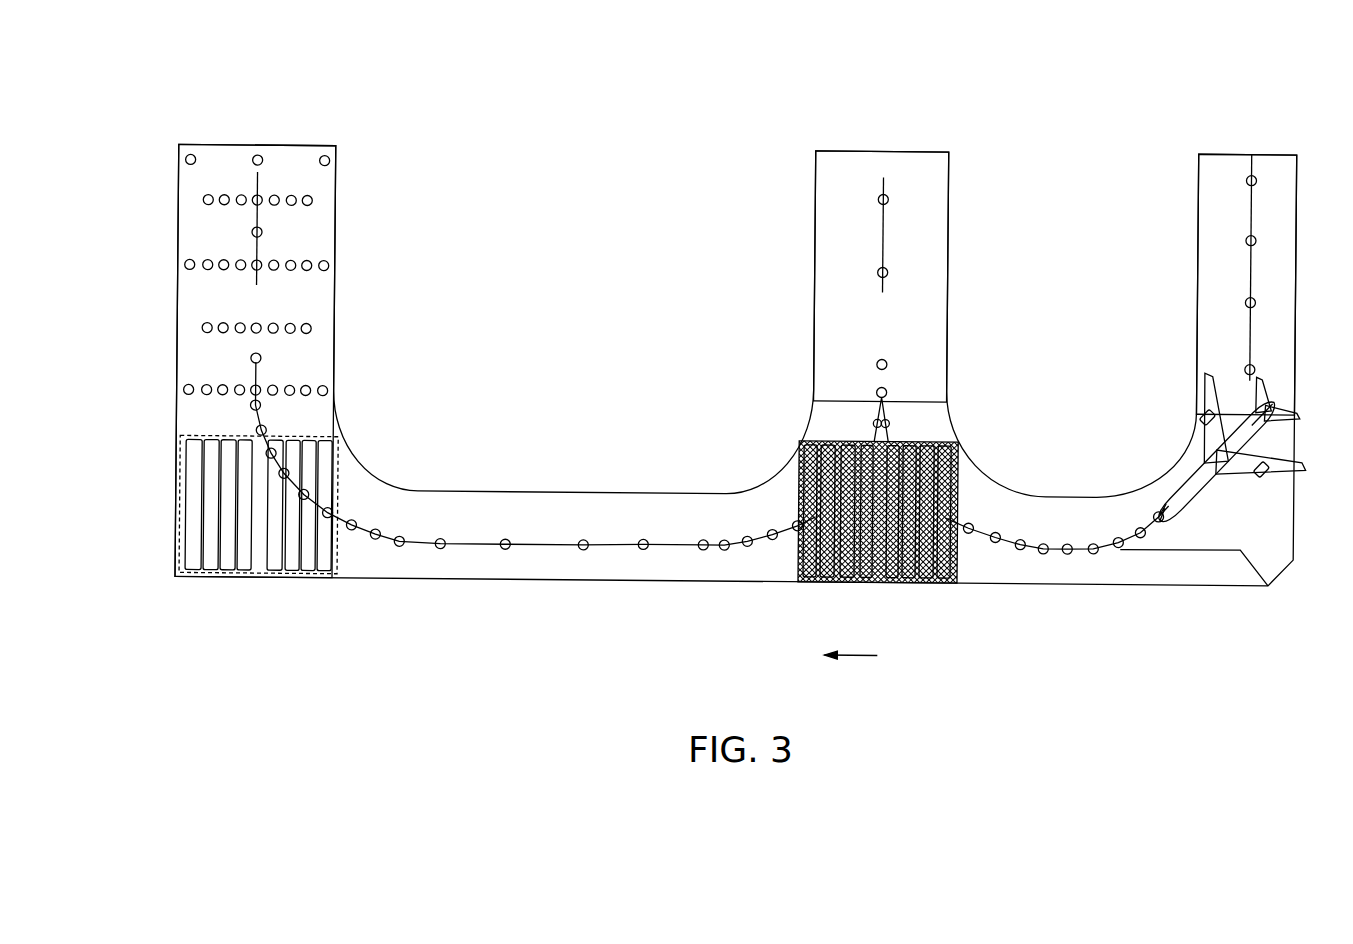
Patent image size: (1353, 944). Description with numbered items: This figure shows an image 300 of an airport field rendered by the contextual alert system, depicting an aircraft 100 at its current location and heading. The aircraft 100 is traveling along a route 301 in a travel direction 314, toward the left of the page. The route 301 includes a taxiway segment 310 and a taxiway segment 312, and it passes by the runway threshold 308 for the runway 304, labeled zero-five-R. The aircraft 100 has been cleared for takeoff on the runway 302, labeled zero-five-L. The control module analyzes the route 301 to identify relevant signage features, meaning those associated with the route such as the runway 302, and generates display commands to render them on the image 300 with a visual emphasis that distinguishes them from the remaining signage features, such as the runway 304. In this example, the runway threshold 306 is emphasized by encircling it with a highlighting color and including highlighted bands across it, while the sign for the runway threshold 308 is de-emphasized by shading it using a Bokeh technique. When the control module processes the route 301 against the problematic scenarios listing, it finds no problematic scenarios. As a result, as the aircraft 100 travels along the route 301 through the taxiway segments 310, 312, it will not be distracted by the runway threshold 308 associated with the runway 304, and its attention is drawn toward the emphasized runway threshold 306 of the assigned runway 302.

The image 300 is at (1092, 105).
The runway 302 is at (207, 300).
The runway 304 is at (930, 307).
The runway threshold 306 is at (178, 457).
The runway threshold 308 is at (800, 552).
The taxiway segment 310 is at (1247, 614).
The taxiway segment 312 is at (878, 614).
The route 301 is at (1165, 564).
The aircraft 100 is at (1170, 390).
The travel direction 314 is at (868, 652).